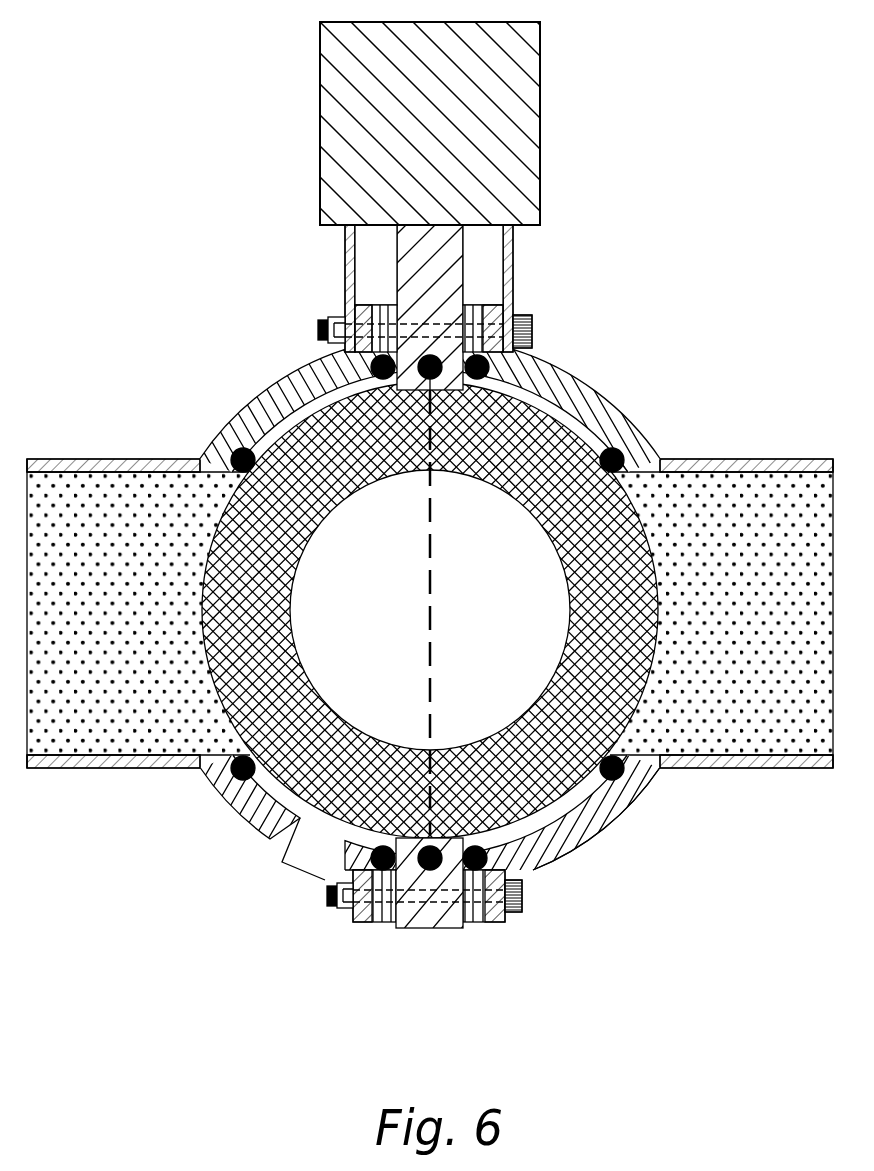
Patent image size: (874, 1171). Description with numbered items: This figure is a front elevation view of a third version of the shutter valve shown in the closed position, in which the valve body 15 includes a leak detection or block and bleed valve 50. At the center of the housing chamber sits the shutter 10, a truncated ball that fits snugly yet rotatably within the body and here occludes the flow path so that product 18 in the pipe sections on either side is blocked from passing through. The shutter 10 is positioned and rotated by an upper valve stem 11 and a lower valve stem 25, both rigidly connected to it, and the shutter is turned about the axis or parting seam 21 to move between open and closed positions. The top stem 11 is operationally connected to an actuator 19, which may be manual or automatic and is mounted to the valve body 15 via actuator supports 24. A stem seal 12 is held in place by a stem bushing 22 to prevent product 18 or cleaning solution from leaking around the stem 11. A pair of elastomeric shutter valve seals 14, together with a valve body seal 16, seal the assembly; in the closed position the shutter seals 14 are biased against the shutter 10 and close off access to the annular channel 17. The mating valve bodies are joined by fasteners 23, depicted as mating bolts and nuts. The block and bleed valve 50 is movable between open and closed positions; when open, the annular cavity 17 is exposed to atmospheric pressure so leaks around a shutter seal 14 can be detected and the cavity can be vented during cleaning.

The shutter 10 is at (366, 438).
The top valve stem 11 is at (397, 266).
The stem seal 12 is at (348, 378).
The shutter valve seals 14 is at (240, 455).
The valve body 15 is at (263, 827).
The valve body seal 16 is at (423, 918).
The annular channel 17 is at (577, 393).
The product 18 is at (693, 573).
The actuator 19 is at (500, 101).
The axis/parting seam 21 is at (440, 793).
The stem bushing 22 is at (510, 258).
The fasteners 23 is at (343, 913).
The actuator supports 24 is at (514, 287).
The bottom valve stem 25 is at (450, 916).
The block and bleed valve 50 is at (280, 866).